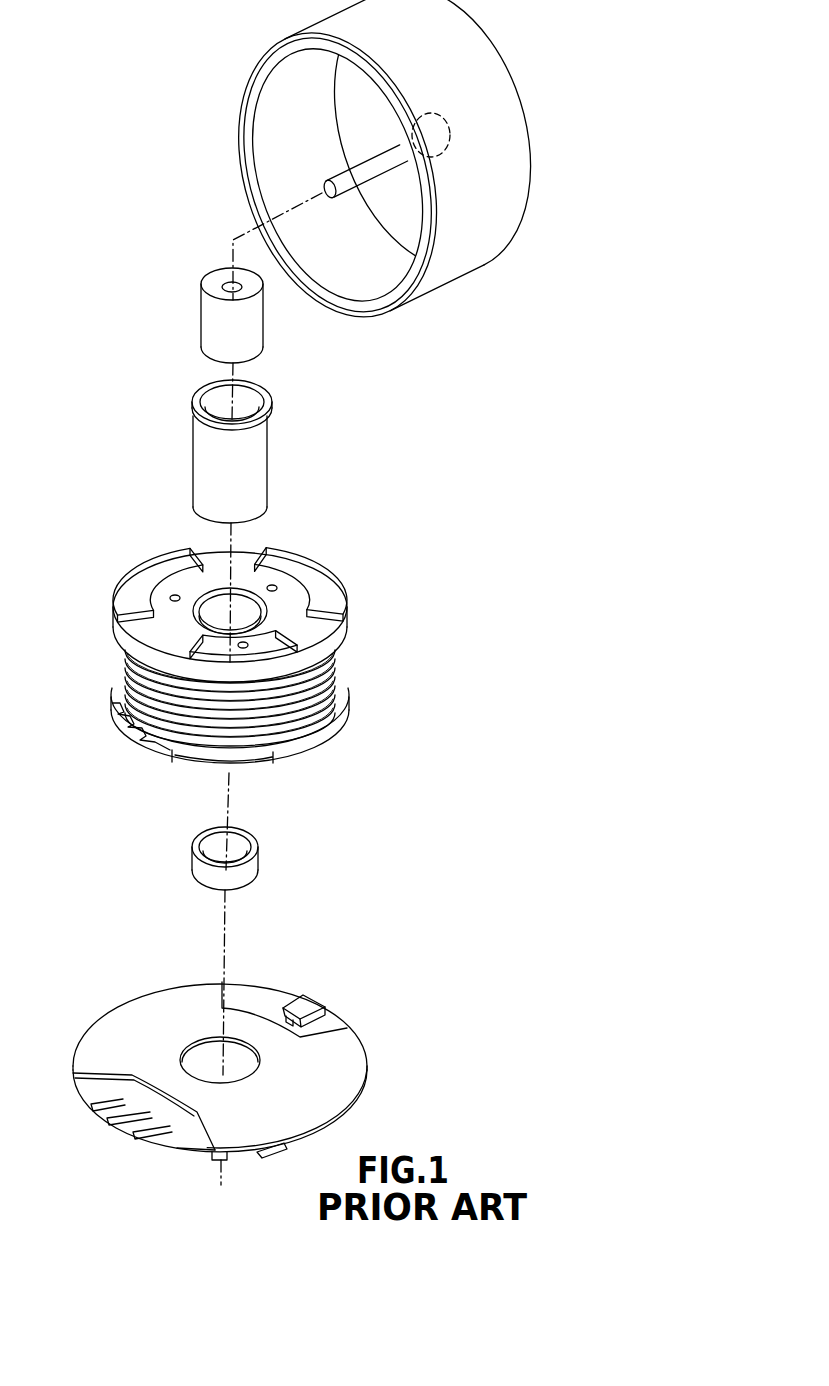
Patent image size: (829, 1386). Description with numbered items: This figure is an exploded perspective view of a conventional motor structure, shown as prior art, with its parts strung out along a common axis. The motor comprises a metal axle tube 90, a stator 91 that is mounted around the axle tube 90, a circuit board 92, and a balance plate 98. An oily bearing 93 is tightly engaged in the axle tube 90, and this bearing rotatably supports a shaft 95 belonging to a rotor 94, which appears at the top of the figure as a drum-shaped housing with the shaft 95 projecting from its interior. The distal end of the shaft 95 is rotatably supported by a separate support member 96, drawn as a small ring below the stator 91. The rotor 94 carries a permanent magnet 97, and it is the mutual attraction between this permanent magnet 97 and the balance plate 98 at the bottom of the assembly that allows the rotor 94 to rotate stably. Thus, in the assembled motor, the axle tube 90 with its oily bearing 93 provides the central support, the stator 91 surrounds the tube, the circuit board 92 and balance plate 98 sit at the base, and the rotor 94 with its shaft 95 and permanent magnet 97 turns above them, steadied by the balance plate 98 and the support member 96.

The axle tube 90 is at (258, 443).
The stator 91 is at (340, 628).
The circuit board 92 is at (95, 1093).
The oily bearing 93 is at (258, 327).
The rotor 94 is at (473, 253).
The shaft 95 is at (328, 180).
The support member 96 is at (257, 863).
The permanent magnet 97 is at (397, 287).
The balance plate 98 is at (118, 1015).